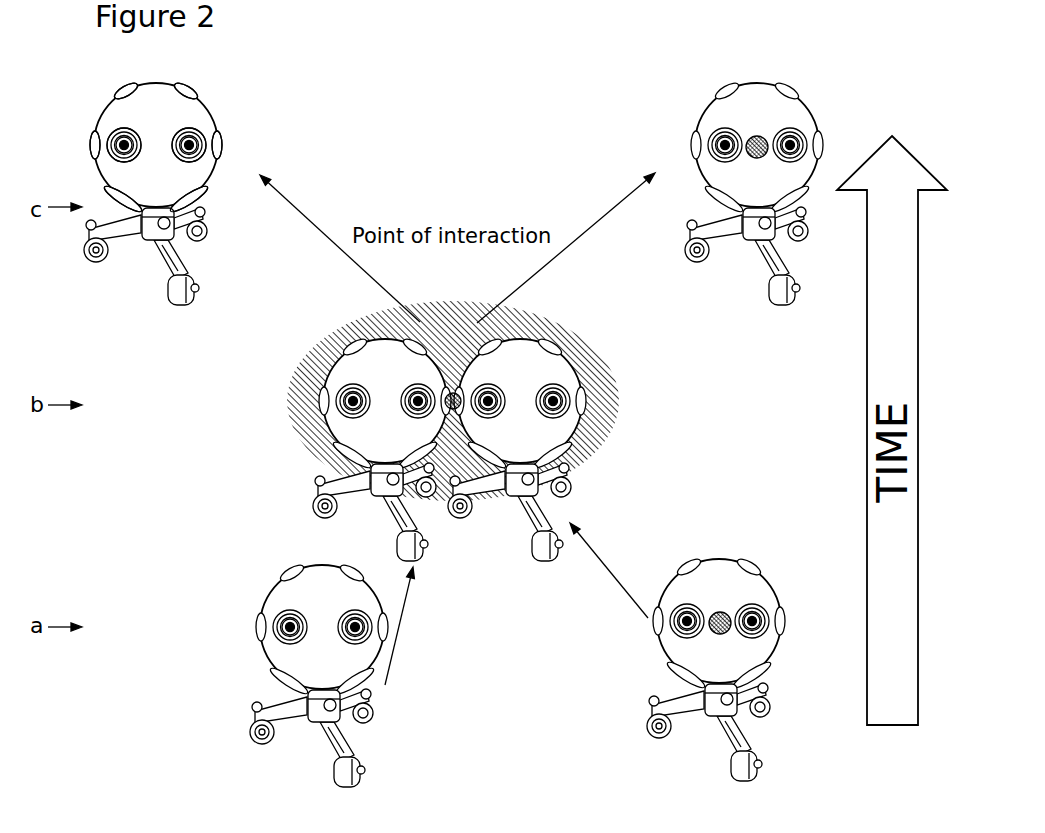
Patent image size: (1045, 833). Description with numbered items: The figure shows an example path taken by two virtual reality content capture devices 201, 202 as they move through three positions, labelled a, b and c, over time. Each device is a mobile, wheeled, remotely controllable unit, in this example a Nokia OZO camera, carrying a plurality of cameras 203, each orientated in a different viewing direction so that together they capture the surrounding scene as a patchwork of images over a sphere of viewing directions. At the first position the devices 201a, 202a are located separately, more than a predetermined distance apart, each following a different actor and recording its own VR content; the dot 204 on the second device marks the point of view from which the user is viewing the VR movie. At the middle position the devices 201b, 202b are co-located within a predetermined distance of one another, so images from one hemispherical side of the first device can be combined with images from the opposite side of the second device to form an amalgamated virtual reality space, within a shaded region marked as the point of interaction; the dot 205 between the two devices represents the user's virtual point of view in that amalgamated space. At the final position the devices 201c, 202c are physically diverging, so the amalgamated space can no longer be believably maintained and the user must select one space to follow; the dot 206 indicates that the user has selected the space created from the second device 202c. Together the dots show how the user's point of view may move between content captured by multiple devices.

The first virtual reality content capture device 201 is at (262, 672).
The first VR content capture device at position a 201a is at (273, 602).
The first VR content capture device at position b 201b is at (350, 370).
The first VR content capture device at position c 201c is at (215, 122).
The second virtual reality content capture device 202 is at (653, 668).
The second VR content capture device at position a 202a is at (662, 645).
The second VR content capture device at position b 202b is at (557, 366).
The second VR content capture device at position c 202c is at (698, 122).
The cameras 203 is at (190, 95).
The dot representing point of view 204 is at (733, 615).
The dot representing point of view of amalgamated VR space 205 is at (458, 408).
The dot representing selected point of view 206 is at (752, 154).